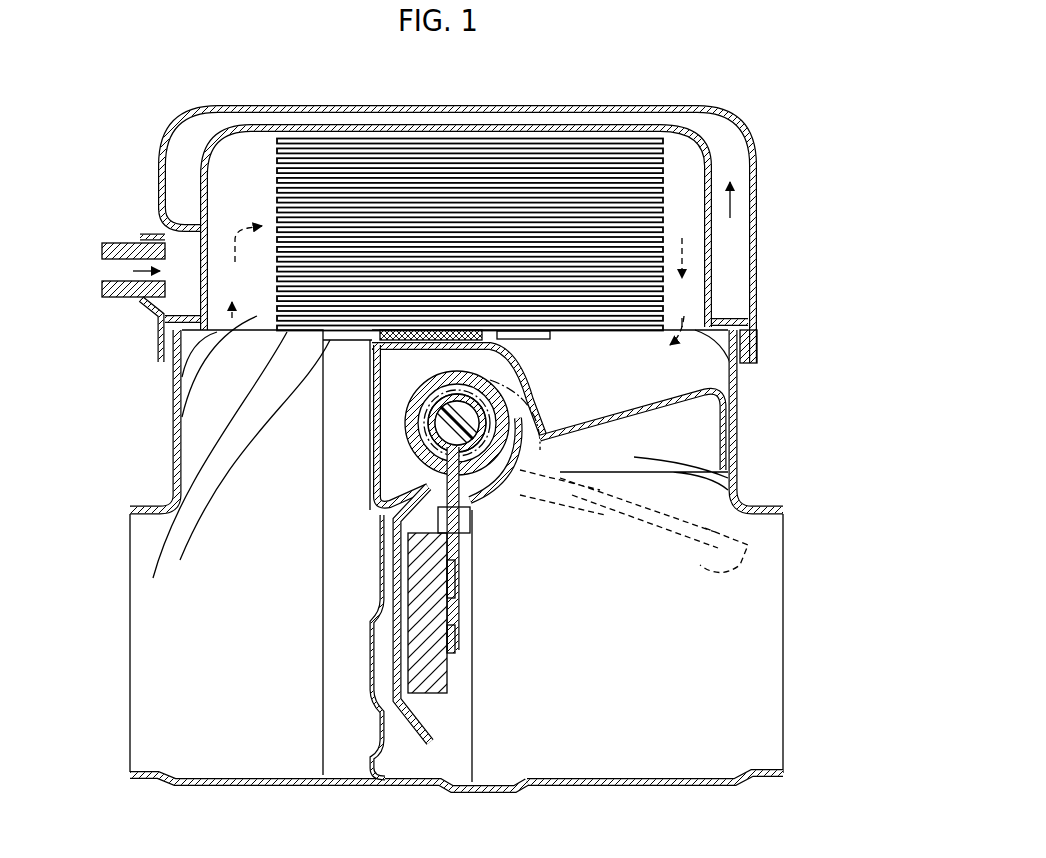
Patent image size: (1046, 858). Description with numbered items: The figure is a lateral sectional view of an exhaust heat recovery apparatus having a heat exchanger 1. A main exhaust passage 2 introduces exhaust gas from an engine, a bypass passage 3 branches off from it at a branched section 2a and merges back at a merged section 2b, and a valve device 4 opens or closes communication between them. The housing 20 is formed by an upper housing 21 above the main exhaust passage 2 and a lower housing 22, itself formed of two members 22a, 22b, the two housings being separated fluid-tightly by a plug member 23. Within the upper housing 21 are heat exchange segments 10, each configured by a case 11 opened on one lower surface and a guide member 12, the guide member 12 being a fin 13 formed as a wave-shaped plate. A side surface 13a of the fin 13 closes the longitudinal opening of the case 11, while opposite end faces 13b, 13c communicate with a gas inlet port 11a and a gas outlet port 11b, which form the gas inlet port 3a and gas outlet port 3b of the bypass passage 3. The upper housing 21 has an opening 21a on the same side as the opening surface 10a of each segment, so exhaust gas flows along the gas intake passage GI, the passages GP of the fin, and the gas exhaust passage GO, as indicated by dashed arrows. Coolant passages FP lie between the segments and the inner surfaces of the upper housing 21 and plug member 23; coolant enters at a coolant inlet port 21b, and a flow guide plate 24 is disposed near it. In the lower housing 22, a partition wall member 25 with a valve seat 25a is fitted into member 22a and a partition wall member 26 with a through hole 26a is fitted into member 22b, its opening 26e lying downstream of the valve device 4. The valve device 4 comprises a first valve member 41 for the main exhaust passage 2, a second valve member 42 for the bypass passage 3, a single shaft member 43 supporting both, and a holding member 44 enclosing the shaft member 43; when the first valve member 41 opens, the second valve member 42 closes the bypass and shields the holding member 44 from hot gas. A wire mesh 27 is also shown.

The heat exchanger 1 is at (396, 97).
The main exhaust passage 2 is at (188, 750).
The branched section 2a is at (168, 512).
The merged section 2b is at (742, 500).
The bypass passage 3 is at (243, 155).
The gas inlet port 3a is at (291, 382).
The gas outlet port 3b is at (764, 347).
The valve device 4 is at (458, 675).
The heat exchange segment 10 is at (683, 183).
The opening surface 10a is at (182, 377).
The case 11 is at (710, 205).
The gas inlet port 11a is at (182, 417).
The gas outlet port 11b is at (738, 372).
The guide member 12 is at (664, 236).
The fin 13 is at (756, 278).
The side surface of the fin 13a is at (182, 443).
The end face of the fin 13b is at (275, 168).
The end face of the fin 13c is at (714, 158).
The housing 20 is at (575, 104).
The upper housing 21 is at (187, 137).
The opening 21a is at (167, 358).
The coolant inlet port 21b is at (140, 240).
The lower housing 22 is at (168, 500).
The member 22a is at (235, 781).
The member 22b is at (636, 783).
The plug member 23 is at (748, 320).
The flow guide plate 24 is at (187, 222).
The partition wall member 25 is at (338, 779).
The valve seat 25a is at (400, 745).
The partition wall member 26 is at (530, 445).
The through hole 26a is at (515, 412).
The opening 26e is at (640, 455).
The wire mesh 27 is at (180, 560).
The first valve member 41 is at (560, 460).
The second valve member 42 is at (490, 478).
The shaft member 43 is at (520, 490).
The holding member 44 is at (470, 395).
The gas intake passage GI is at (227, 168).
The gas exhaust passage GO is at (721, 197).
The passage GP is at (667, 148).
The coolant passage FP is at (458, 120).